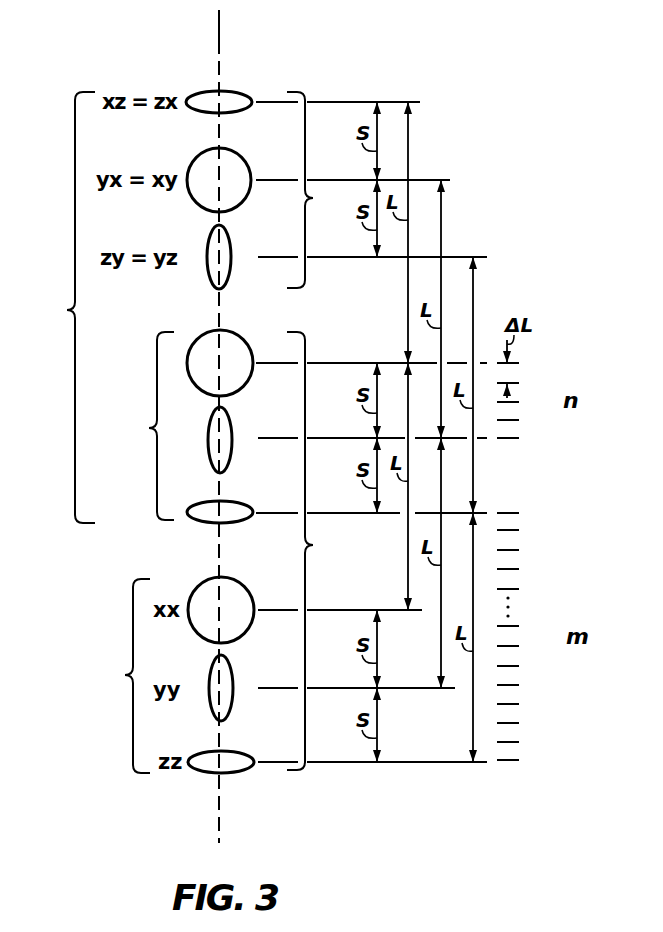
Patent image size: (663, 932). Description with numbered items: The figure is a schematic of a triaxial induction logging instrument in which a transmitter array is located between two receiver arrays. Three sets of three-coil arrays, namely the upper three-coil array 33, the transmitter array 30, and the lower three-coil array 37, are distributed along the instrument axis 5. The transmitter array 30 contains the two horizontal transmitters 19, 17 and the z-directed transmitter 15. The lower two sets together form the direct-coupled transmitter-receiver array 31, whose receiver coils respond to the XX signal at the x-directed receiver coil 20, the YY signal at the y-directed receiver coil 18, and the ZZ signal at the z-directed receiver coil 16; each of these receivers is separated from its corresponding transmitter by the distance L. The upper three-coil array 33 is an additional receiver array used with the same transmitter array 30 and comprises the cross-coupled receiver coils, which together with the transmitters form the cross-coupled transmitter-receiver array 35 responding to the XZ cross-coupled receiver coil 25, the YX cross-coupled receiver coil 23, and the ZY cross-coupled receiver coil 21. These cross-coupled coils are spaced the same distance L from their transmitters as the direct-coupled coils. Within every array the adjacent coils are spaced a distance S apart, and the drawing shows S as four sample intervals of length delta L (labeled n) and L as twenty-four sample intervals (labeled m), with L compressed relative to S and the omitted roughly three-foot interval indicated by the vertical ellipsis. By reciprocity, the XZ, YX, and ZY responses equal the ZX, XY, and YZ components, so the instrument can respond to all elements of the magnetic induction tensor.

The instrument axis 5 is at (220, 30).
The XZ cross-coupled receiver coil 25 is at (240, 95).
The YX cross-coupled receiver coil 23 is at (241, 158).
The ZY cross-coupled receiver coil 21 is at (232, 248).
The horizontal transmitter 19 is at (240, 335).
The horizontal transmitter 17 is at (233, 430).
The z-directed transmitter 15 is at (240, 505).
The x-directed receiver coil 20 is at (242, 585).
The y-directed receiver coil 18 is at (234, 678).
The z-directed receiver coil 16 is at (242, 753).
The cross-coupled transmitter-receiver array 35 is at (64, 307).
The upper three-coil array 33 is at (318, 190).
The transmitter array 30 is at (146, 426).
The direct-coupled transmitter-receiver array 31 is at (318, 551).
The three-coil array 37 is at (120, 676).